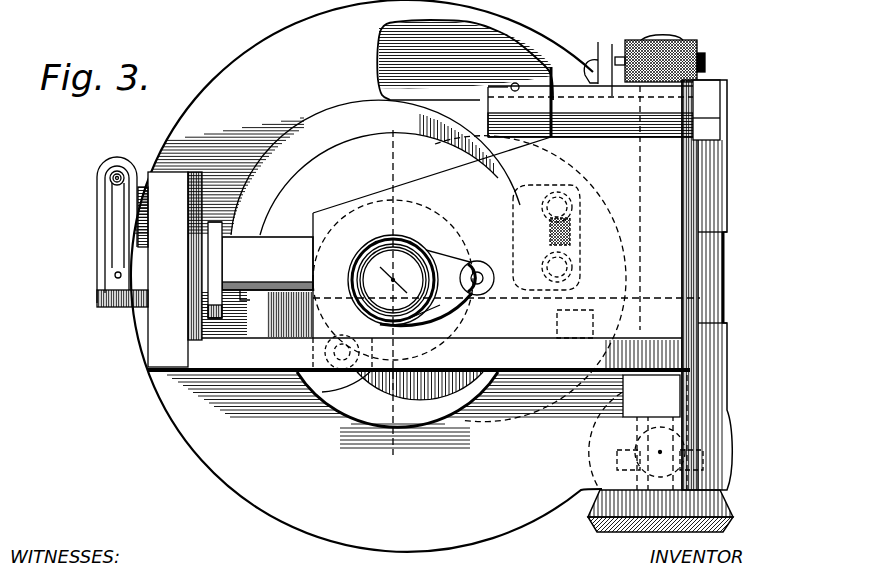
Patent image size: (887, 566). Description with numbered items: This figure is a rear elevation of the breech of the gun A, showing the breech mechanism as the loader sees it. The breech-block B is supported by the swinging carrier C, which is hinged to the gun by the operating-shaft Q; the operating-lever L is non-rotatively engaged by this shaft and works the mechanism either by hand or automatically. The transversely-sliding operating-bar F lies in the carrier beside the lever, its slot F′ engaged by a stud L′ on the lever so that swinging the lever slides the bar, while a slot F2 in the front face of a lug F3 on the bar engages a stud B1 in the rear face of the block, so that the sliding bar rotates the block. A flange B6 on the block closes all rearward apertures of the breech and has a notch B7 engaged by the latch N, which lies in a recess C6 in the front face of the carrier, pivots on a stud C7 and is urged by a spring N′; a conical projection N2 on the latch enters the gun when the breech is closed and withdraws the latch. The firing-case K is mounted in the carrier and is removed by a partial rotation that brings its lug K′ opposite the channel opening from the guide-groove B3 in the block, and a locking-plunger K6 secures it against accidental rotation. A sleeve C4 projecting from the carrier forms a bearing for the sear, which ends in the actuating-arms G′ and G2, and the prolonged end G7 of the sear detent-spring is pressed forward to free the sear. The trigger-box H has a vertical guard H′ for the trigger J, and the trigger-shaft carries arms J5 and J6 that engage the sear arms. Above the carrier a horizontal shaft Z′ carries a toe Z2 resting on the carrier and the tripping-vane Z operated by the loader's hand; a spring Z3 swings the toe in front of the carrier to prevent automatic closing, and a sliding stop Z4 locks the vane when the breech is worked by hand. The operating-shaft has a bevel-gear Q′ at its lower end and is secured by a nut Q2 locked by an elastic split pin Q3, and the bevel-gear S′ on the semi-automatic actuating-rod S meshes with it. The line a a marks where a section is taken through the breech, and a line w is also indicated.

The gun A is at (366, 276).
The breech-block B is at (379, 174).
The stud B1 is at (397, 399).
The guide-groove B3 is at (430, 322).
The flange B6 is at (375, 167).
The notch B7 is at (530, 320).
The swinging carrier C is at (386, 276).
The sleeve C4 is at (267, 263).
The recess C6 is at (514, 210).
The stud C7 is at (568, 260).
The operating-bar F is at (313, 315).
The slot F′ is at (593, 325).
The slot F2 is at (341, 388).
The lug F3 is at (330, 383).
The actuating-arm G′ is at (227, 225).
The actuating-arm G2 is at (207, 315).
The bent end of detent-spring G7 is at (245, 298).
The trigger-box H is at (137, 300).
The vertical guard H′ is at (107, 207).
The trigger J is at (113, 232).
The upper arm J5 is at (217, 225).
The lower arm J6 is at (210, 320).
The firing-case K is at (383, 236).
The lug K′ is at (450, 305).
The locking-plunger K6 is at (480, 275).
The operating-lever L is at (263, 363).
The stud L′ is at (577, 330).
The latch N is at (557, 196).
The spring N′ is at (573, 230).
The conical projection N2 is at (565, 203).
The operating-shaft Q is at (680, 190).
The bevel-gear Q′ is at (593, 517).
The nut Q2 is at (697, 42).
The elastic split pin Q3 is at (705, 60).
The semi-automatic actuating-rod S is at (673, 438).
The bevel-gear S′ is at (735, 450).
The tripping-vane Z is at (465, 78).
The horizontal shaft Z′ is at (605, 60).
The toe Z2 is at (717, 132).
The spring Z3 is at (512, 113).
The sliding stop Z4 is at (578, 62).
The section line a a is at (353, 240).
The center line w is at (506, 291).